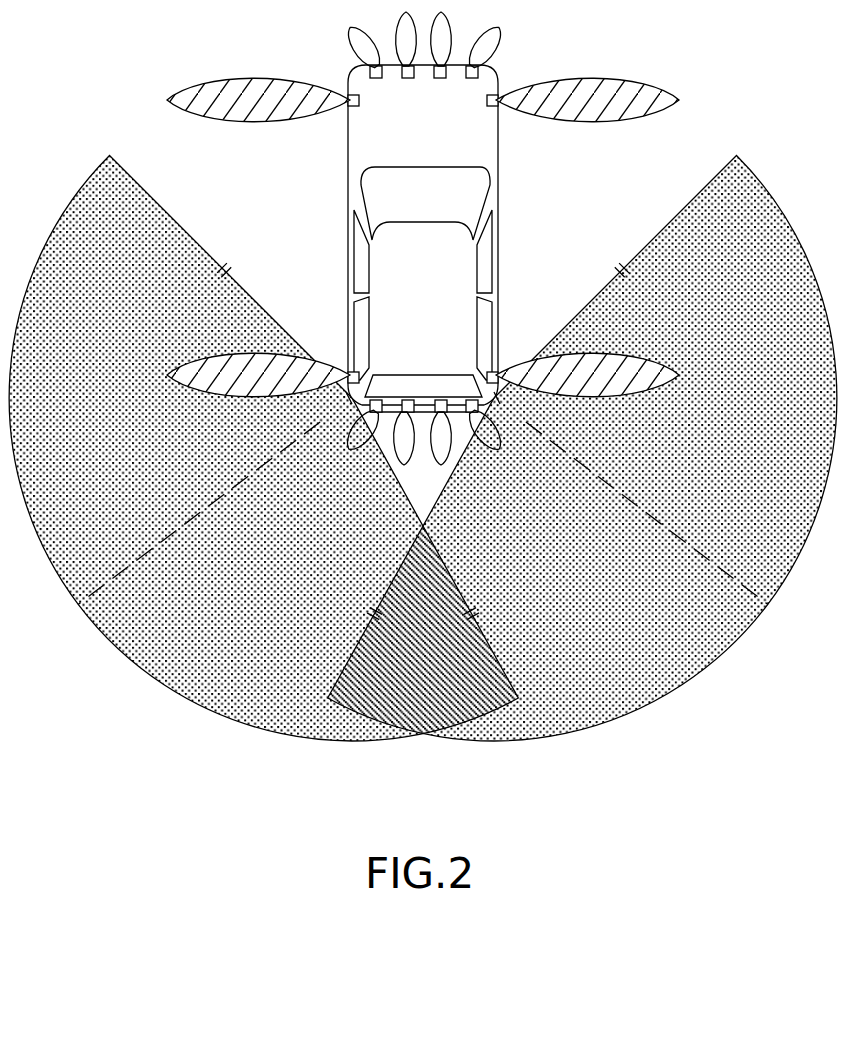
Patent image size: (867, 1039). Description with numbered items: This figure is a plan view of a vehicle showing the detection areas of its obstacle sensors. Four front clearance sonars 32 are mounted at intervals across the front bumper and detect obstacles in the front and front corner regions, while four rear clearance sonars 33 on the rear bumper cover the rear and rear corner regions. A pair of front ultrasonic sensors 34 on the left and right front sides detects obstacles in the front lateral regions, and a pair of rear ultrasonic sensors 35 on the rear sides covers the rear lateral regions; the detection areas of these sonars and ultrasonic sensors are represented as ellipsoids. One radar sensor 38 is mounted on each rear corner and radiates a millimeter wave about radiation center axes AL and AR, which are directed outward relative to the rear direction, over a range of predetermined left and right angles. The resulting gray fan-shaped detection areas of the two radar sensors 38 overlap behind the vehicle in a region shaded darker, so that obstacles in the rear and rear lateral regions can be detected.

The front clearance sonar 32 is at (370, 70).
The rear clearance sonar 33 is at (391, 397).
The front ultrasonic sensor 34 is at (349, 110).
The rear ultrasonic sensor 35 is at (350, 365).
The radar sensor 38 is at (350, 397).
The radiation center axis AL is at (72, 616).
The radiation center axis AR is at (767, 610).